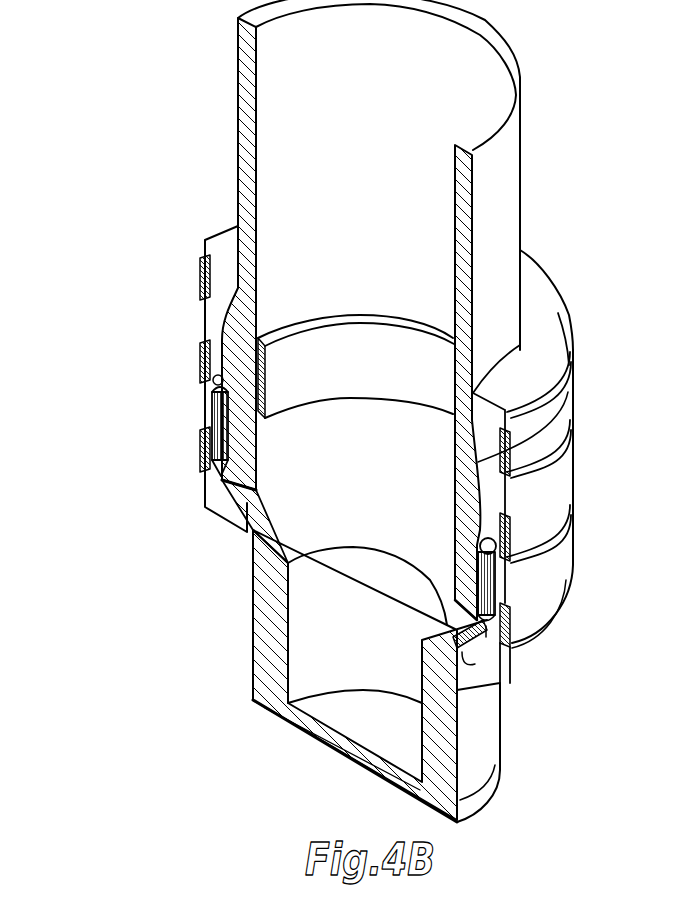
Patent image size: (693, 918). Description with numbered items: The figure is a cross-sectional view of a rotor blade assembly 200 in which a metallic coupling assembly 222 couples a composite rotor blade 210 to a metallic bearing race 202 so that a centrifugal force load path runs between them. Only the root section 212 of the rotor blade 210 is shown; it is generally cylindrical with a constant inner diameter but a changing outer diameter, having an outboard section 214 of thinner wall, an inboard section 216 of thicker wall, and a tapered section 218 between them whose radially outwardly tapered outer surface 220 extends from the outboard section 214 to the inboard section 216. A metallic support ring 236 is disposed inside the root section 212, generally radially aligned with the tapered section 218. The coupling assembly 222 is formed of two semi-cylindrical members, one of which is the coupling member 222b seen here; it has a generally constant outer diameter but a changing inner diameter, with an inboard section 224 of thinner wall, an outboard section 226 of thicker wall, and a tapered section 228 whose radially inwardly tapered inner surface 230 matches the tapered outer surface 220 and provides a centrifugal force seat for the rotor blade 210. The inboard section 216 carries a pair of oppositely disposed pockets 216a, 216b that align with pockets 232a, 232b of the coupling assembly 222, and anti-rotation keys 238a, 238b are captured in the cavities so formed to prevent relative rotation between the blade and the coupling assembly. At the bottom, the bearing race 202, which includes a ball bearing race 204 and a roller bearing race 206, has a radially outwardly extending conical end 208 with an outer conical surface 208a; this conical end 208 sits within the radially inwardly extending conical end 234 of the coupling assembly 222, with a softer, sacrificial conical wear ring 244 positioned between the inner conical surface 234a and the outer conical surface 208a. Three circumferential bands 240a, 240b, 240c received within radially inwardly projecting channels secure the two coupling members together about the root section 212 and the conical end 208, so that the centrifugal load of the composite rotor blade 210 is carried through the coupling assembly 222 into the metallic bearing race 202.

The rotor blade assembly 200 is at (612, 213).
The metallic bearing race 202 is at (482, 747).
The ball bearing race 204 is at (460, 798).
The roller bearing race 206 is at (480, 688).
The radially outwardly extending conical end 208 is at (345, 534).
The outer conical surface 208a is at (244, 498).
The composite rotor blade 210 is at (513, 150).
The root section 212 is at (513, 190).
The outboard section 214 is at (457, 224).
The inboard section 216 is at (474, 560).
The pocket 216a is at (222, 481).
The pocket 216b is at (481, 545).
The tapered section 218 is at (457, 493).
The radially outwardly tapered outer surface 220 is at (457, 448).
The metallic coupling assembly 222 is at (552, 268).
The semi-cylindrical coupling member 222b is at (558, 313).
The inboard section 224 is at (530, 575).
The outboard section 226 is at (477, 408).
The tapered section 228 is at (512, 510).
The radially inwardly tapered inner surface 230 is at (512, 440).
The pocket 232a is at (217, 383).
The pocket 232b is at (510, 643).
The radially inwardly extending conical end 234 is at (497, 667).
The inner conical surface 234a is at (247, 524).
The metallic support ring 236 is at (328, 342).
The anti-rotation key 238a is at (217, 412).
The anti-rotation key 238b is at (485, 592).
The circumferential band 240a is at (568, 395).
The circumferential band 240b is at (568, 472).
The circumferential band 240c is at (568, 557).
The conical wear ring 244 is at (463, 673).